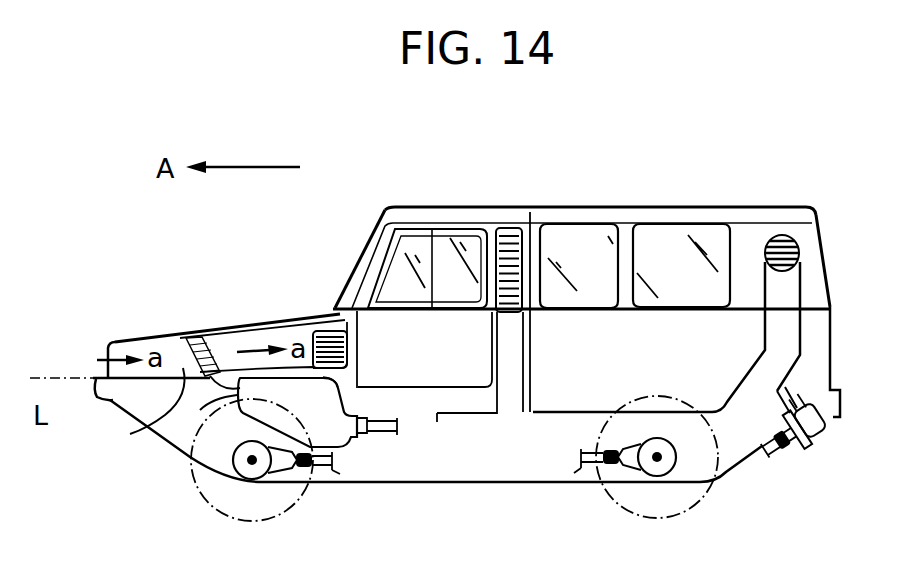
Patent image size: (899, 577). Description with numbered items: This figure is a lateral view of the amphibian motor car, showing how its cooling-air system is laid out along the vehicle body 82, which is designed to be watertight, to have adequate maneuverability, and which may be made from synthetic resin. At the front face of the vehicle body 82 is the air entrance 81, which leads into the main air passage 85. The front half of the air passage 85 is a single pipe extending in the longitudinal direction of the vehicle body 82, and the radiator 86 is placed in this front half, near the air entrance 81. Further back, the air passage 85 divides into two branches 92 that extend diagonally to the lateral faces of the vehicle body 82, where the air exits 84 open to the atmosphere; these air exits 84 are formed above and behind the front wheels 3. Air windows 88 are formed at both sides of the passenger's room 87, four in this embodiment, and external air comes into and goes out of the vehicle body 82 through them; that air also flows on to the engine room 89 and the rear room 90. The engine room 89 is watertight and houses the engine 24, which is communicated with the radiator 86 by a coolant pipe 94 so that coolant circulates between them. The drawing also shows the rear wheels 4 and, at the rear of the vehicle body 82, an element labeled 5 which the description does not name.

The front wheels 3 is at (233, 517).
The rear wheel 4 is at (626, 521).
The muffler 5 is at (836, 428).
The engine 24 is at (326, 399).
The air entrance 81 is at (105, 377).
The vehicle body 82 is at (479, 494).
The air exits 84 is at (332, 326).
The air passage 85 is at (141, 426).
The radiator 86 is at (176, 332).
The passenger's room 87 is at (423, 196).
The air windows 88 is at (522, 243).
The engine room 89 is at (356, 470).
The rear room 90 is at (733, 456).
The branches 92 is at (246, 326).
The coolant pipe 94 is at (186, 443).